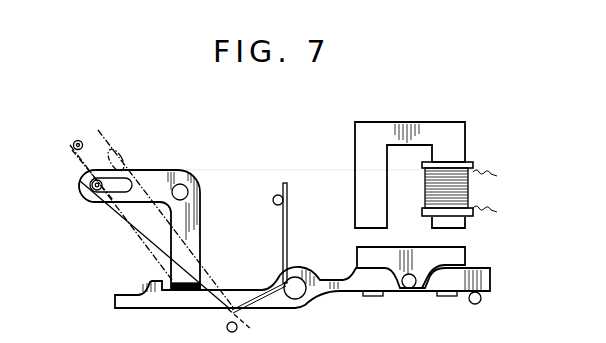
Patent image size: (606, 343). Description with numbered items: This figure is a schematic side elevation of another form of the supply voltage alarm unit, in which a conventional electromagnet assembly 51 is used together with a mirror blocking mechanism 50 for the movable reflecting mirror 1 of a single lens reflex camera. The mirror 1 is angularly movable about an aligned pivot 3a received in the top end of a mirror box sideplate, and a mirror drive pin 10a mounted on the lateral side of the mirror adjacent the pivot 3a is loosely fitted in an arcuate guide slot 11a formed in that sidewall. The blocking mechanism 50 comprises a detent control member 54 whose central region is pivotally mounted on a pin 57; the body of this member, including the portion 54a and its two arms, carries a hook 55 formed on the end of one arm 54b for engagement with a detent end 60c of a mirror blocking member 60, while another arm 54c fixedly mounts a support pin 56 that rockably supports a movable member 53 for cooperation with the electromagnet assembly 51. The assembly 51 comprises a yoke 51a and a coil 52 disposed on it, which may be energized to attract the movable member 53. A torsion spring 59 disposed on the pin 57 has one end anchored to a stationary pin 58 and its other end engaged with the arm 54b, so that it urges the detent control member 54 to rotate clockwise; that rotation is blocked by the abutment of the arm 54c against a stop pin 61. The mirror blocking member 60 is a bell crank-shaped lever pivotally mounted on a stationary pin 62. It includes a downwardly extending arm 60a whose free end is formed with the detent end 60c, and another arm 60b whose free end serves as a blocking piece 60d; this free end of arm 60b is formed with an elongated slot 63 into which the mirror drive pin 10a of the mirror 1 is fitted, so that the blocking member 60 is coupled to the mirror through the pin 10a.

The movable reflecting mirror 1 is at (154, 247).
The pivot 3a is at (72, 141).
The mirror drive pin 10a is at (88, 182).
The arcuate guide slot 11a is at (112, 147).
The mirror blocking mechanism 50 is at (255, 271).
The electromagnet assembly 51 is at (471, 146).
The yoke 51a is at (422, 130).
The coil 52 is at (458, 186).
The movable member 53 is at (455, 257).
The detent control member 54 is at (306, 303).
The end portion of base plate 54a is at (490, 281).
The arm 54b is at (198, 303).
The arm 54c is at (358, 279).
The hook 55 is at (155, 280).
The support pin 56 is at (408, 288).
The pin 57 is at (293, 277).
The stationary pin 58 is at (273, 197).
The torsion spring 59 is at (288, 210).
The mirror blocking member 60 is at (199, 204).
The downwardly extending arm 60a is at (197, 233).
The arm 60b is at (152, 170).
The detent end 60c is at (194, 273).
The blocking piece 60d is at (74, 148).
The stop pin 61 is at (475, 304).
The stationary pin 62 is at (182, 183).
The elongated slot 63 is at (109, 205).